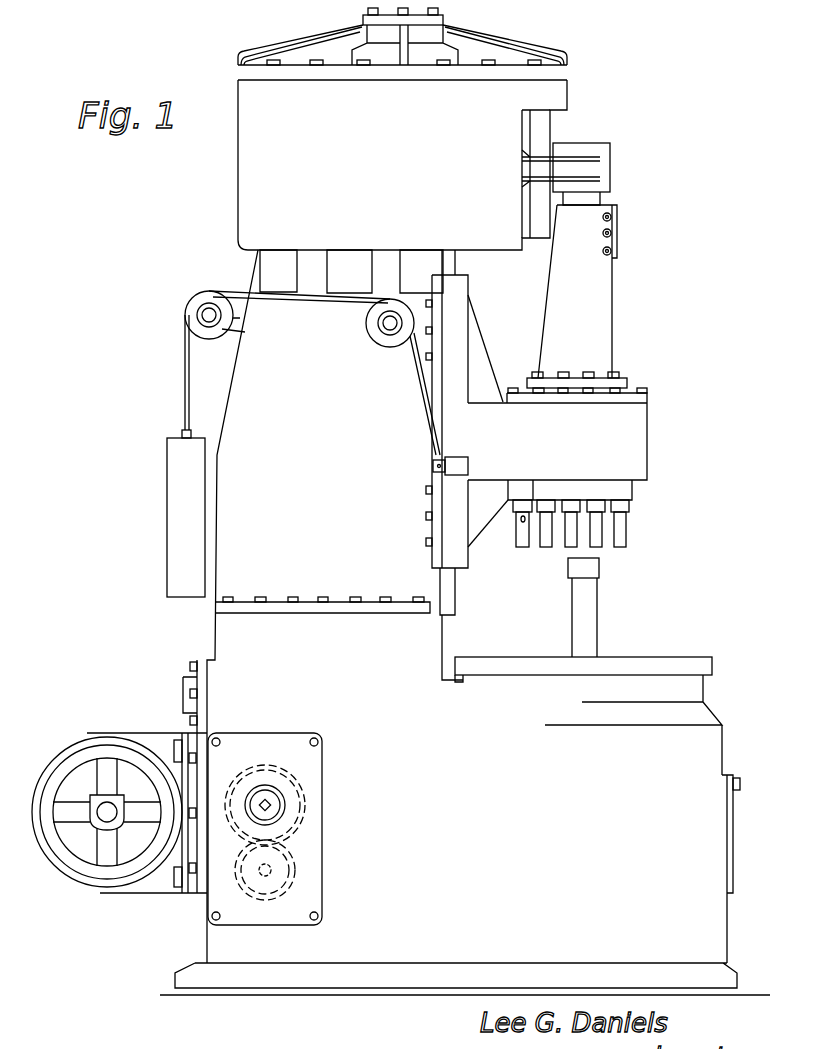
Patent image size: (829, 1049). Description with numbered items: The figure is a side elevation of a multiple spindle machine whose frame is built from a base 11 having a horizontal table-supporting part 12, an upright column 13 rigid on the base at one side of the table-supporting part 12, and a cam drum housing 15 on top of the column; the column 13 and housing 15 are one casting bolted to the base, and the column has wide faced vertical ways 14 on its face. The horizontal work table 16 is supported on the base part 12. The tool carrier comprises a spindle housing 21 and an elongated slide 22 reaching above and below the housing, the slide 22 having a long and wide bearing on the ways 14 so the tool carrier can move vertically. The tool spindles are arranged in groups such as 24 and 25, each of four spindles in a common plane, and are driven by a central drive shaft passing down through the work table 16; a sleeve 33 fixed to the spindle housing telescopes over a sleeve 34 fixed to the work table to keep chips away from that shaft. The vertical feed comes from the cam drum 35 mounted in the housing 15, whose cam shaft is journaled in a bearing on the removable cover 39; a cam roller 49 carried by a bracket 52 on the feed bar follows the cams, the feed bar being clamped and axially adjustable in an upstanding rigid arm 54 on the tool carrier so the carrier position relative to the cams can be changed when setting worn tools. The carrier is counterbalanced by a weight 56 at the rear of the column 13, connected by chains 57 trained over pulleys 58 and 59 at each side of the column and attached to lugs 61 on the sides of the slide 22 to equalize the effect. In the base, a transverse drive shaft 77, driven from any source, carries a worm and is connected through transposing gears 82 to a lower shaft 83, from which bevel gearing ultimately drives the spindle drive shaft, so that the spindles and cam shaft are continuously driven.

The base 11 is at (705, 940).
The table-supporting part 12 is at (690, 690).
The column 13 is at (275, 606).
The vertical ways 14 is at (438, 580).
The cam drum housing 15 is at (402, 165).
The work table 16 is at (652, 660).
The spindle housing 21 is at (630, 440).
The slide 22 is at (460, 362).
The group of tool spindles 24 is at (520, 537).
The group of tool spindles 25 is at (618, 544).
The sleeve 33 is at (600, 568).
The sleeve 34 is at (590, 622).
The cam drum 35 is at (555, 118).
The removable cover 39 is at (515, 45).
The cam roller 49 is at (545, 152).
The bracket 52 is at (585, 170).
The upstanding arm 54 is at (602, 325).
The weight 56 is at (175, 505).
The chains 57 is at (185, 378).
The pulley 58 is at (212, 300).
The pulley 59 is at (378, 331).
The lugs 61 is at (438, 472).
The transverse drive shaft 77 is at (270, 807).
The transposing gears 82 is at (288, 836).
The lower shaft 83 is at (272, 869).